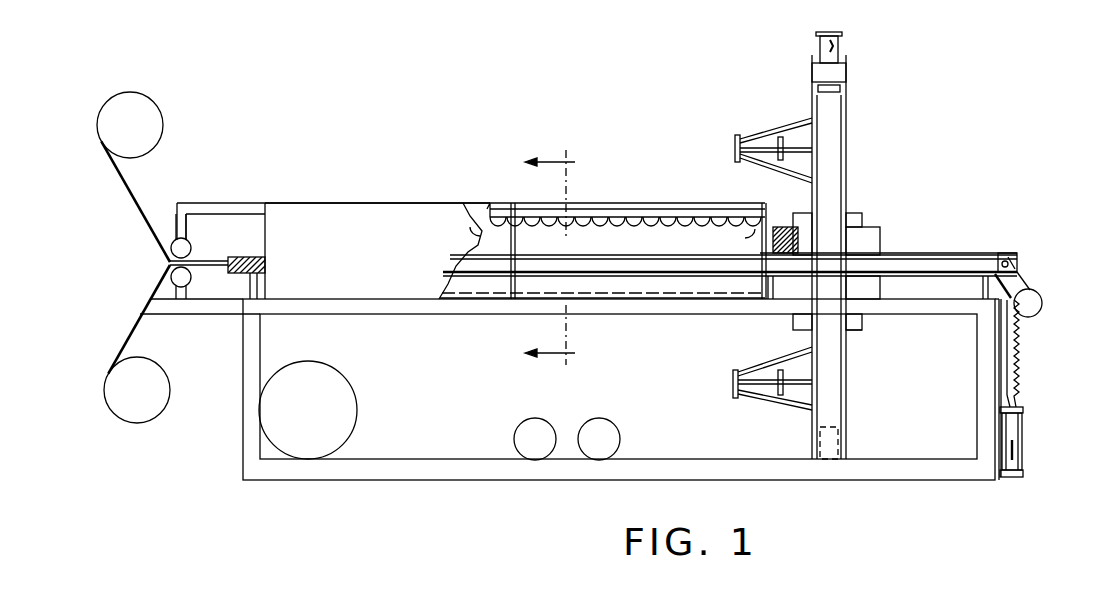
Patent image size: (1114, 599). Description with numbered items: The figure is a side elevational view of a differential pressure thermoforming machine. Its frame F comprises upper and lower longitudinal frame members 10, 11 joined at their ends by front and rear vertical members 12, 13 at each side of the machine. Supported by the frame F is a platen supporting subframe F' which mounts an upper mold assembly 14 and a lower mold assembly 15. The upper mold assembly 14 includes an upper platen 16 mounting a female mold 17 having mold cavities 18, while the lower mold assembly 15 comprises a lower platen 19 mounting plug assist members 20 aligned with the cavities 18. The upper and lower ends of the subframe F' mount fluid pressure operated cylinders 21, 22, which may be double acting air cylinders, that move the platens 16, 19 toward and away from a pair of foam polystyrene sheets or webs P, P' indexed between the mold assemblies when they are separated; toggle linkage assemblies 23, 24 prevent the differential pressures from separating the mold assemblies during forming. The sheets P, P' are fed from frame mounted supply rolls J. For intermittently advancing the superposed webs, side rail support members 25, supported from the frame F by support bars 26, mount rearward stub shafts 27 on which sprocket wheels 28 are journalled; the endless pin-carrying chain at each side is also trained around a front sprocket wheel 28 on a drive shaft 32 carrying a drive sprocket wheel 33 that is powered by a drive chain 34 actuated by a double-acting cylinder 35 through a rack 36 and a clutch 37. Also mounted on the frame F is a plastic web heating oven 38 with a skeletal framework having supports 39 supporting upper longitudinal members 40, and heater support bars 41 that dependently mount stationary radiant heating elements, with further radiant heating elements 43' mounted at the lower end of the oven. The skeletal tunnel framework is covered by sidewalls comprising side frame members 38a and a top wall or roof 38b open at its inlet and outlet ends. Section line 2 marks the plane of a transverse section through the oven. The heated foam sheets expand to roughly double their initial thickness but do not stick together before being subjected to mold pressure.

The upper longitudinal frame member 10 is at (667, 311).
The lower longitudinal frame member 11 is at (768, 474).
The front vertical member 12 is at (977, 391).
The rear vertical member 13 is at (264, 343).
The upper mold assembly 14 is at (892, 213).
The lower mold assembly 15 is at (870, 322).
The upper platen 16 is at (855, 212).
The female mold 17 is at (882, 240).
The mold cavities 18 is at (793, 242).
The lower platen 19 is at (855, 332).
The plug assist members 20 is at (880, 283).
The fluid pressure operated cylinder 21 is at (840, 45).
The fluid pressure operated cylinder 22 is at (845, 440).
The toggle linkage assembly 23 is at (770, 130).
The toggle linkage assembly 24 is at (760, 370).
The side rail support member 25 is at (962, 253).
The support bar 26 is at (985, 285).
The rearward stub shaft 27 is at (247, 257).
The sprocket wheel 28 is at (228, 277).
The drive shaft 32 is at (1008, 262).
The drive sprocket wheel 33 is at (1018, 262).
The drive chain 34 is at (1025, 278).
The double-acting fluid pressure operated cylinder 35 is at (1023, 443).
The rack 36 is at (1020, 365).
The clutch 37 is at (1042, 310).
The plastic web heating oven 38 is at (351, 198).
The side frame members 38a is at (578, 263).
The top wall or roof 38b is at (378, 201).
The supports 39 is at (480, 236).
The upper longitudinal members 40 is at (600, 203).
The heater support bars 41 is at (618, 216).
The radiant heating elements 43' is at (602, 324).
The section line 2- 2 is at (538, 258).
The supply rolls J is at (143, 95).
The plastic sheet P is at (139, 201).
The plastic sheet P' is at (121, 344).
The frame F is at (195, 496).
The platen supporting subframe F' is at (904, 113).